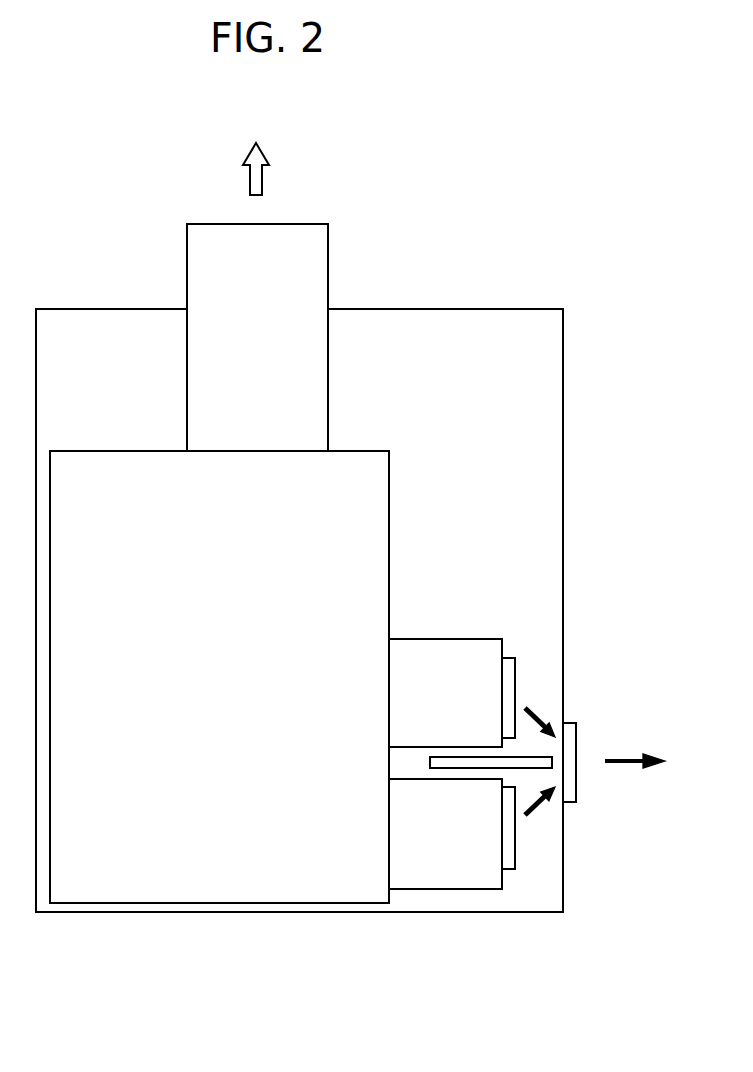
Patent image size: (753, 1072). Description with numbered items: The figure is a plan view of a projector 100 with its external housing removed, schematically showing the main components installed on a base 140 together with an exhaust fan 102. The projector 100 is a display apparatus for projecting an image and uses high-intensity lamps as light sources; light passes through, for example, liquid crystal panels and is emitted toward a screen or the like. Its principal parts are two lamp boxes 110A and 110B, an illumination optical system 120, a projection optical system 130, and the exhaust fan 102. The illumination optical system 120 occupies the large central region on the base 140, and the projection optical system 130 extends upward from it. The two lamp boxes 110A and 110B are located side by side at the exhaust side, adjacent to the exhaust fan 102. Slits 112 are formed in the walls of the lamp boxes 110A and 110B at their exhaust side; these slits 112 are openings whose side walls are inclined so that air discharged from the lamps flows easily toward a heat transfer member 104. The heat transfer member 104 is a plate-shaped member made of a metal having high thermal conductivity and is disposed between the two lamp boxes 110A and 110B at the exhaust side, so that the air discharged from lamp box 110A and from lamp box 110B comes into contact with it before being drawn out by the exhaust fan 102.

The projector 100 is at (286, 96).
The exhaust fan 102 is at (570, 733).
The heat transfer member 104 is at (543, 765).
The lamp box 110A is at (471, 910).
The lamp box 110B is at (482, 621).
The slits 112 is at (508, 675).
The illumination optical system 120 is at (267, 883).
The projection optical system 130 is at (200, 264).
The base 140 is at (535, 405).